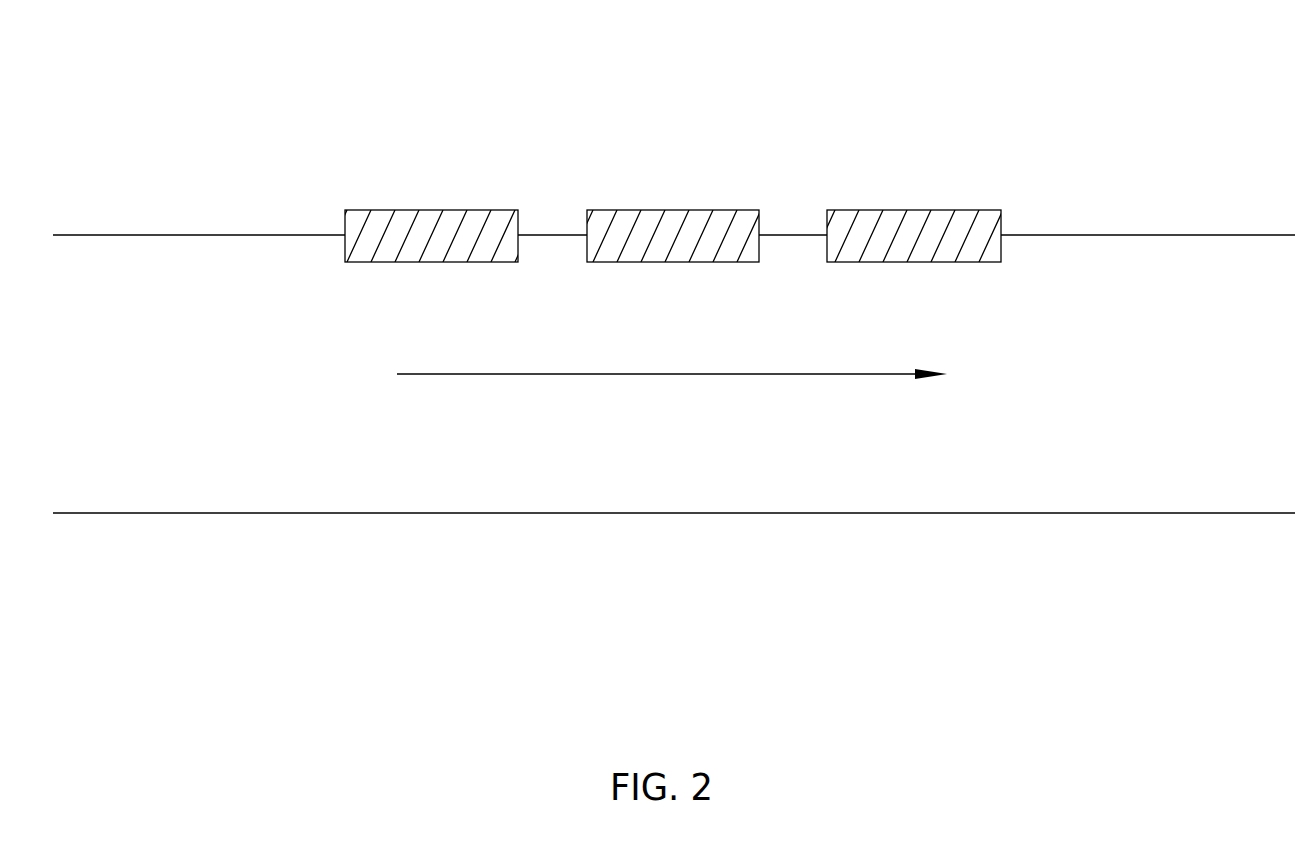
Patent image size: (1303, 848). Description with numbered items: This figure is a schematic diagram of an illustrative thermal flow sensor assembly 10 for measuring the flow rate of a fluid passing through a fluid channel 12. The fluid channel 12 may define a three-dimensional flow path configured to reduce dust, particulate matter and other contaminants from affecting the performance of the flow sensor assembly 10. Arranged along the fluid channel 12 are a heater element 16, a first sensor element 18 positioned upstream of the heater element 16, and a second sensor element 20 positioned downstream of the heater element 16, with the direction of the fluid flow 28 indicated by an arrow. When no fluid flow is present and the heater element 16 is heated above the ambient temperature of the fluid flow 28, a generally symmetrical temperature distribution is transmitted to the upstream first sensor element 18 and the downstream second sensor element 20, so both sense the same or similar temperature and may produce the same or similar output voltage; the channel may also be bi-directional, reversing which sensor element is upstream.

The thermal flow sensor assembly 10 is at (519, 95).
The fluid channel 12 is at (328, 262).
The heater element 16 is at (672, 210).
The first sensor element 18 is at (431, 210).
The second sensor element 20 is at (913, 210).
The fluid flow 28 is at (653, 374).